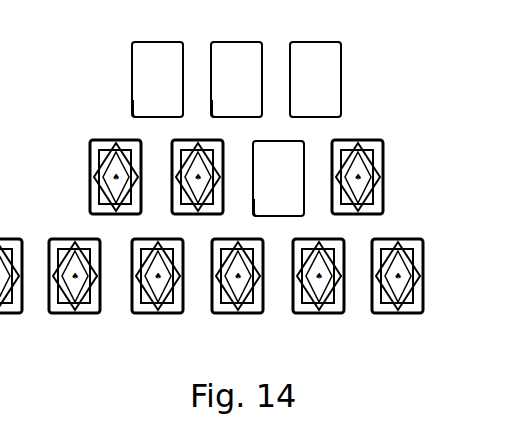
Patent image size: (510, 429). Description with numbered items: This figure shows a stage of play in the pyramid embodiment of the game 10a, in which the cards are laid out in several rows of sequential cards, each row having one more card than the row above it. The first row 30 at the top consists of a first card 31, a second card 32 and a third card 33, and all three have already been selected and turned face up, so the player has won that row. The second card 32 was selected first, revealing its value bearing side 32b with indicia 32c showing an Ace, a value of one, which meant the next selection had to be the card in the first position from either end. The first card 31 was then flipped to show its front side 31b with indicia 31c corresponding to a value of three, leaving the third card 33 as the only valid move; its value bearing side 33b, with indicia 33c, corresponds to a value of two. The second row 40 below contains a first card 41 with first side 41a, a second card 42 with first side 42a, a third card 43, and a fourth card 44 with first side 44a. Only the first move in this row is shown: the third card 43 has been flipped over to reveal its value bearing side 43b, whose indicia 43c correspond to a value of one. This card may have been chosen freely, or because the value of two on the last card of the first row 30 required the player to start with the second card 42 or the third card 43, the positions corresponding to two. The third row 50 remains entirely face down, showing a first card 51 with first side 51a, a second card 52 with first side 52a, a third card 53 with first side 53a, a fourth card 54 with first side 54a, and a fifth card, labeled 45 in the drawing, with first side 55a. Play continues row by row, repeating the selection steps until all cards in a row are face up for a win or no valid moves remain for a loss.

The game 10a is at (94, 62).
The first row 30 is at (105, 100).
The first card 31 is at (133, 43).
The front side 31b is at (138, 112).
The indicia 31c is at (140, 52).
The second card 32 is at (212, 43).
The value bearing side 32b is at (215, 112).
The indicia 32c is at (220, 50).
The third card 33 is at (340, 42).
The value bearing side 33b is at (333, 57).
The third dealer card rank indicator 33c is at (297, 47).
The second row 40 is at (79, 183).
The first card 41 is at (91, 141).
The first side 41a is at (95, 207).
The second card 42 is at (175, 141).
The first side 42a is at (178, 207).
The third card 43 is at (258, 141).
The value bearing side 43b is at (258, 212).
The indicia 43c is at (260, 150).
The fourth card 44 is at (337, 141).
The first side 44a is at (337, 207).
The fifth card of second row 45 is at (374, 240).
The third row 50 is at (46, 301).
The first card 51 is at (50, 239).
The first side 51a is at (62, 307).
The second card 52 is at (134, 240).
The first side 52a is at (136, 305).
The third card 53 is at (214, 240).
The first side 53a is at (217, 305).
The fourth card 54 is at (295, 240).
The first side 54a is at (298, 305).
The first side 55a is at (377, 305).